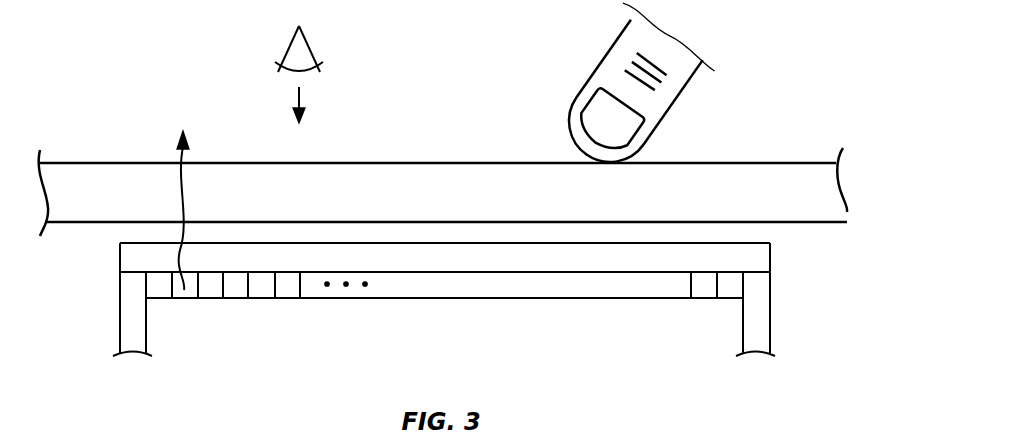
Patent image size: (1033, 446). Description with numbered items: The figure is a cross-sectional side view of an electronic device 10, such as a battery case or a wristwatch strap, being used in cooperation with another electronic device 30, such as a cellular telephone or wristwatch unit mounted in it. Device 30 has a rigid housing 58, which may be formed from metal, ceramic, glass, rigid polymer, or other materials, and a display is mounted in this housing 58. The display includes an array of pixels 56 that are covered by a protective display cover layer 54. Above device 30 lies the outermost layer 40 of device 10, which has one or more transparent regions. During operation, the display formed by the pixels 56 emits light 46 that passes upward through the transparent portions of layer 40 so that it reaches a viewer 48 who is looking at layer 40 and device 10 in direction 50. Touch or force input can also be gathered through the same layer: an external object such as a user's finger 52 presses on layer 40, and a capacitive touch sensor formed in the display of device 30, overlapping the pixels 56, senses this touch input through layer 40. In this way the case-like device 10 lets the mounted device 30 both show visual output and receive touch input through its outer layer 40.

The electronic device 10 is at (880, 183).
The electronic device 30 is at (437, 299).
The layer 40 is at (770, 176).
The light 46 is at (178, 150).
The viewer 48 is at (306, 47).
The direction 50 is at (305, 95).
The finger 52 is at (598, 67).
The display cover layer 54 is at (133, 257).
The pixels 56 is at (182, 291).
The housing 58 is at (125, 325).